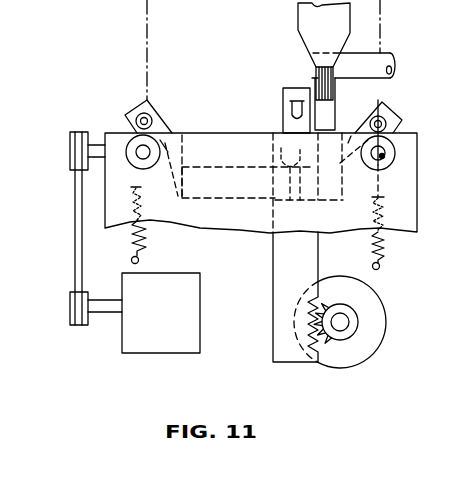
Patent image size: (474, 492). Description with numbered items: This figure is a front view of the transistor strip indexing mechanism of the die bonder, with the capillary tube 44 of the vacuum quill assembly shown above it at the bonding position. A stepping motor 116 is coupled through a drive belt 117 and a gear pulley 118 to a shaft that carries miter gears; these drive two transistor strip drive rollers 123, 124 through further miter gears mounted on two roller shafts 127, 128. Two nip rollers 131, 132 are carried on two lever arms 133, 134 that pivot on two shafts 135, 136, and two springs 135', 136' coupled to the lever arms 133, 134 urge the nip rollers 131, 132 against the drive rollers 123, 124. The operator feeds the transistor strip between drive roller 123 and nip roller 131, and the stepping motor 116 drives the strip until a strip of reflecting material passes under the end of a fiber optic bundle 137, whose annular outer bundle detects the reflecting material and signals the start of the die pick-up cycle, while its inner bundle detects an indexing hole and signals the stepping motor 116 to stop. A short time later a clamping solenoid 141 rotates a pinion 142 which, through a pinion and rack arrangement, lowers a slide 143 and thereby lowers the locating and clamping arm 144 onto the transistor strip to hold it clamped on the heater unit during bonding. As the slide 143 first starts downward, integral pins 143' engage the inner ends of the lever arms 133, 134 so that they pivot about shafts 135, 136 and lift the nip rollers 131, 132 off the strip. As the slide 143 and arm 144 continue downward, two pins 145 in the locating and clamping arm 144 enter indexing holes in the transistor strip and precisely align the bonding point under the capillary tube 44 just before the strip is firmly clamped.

The capillary tube 44 is at (316, 72).
The stepping motor 116 is at (167, 352).
The drive belt 117 is at (75, 246).
The gear pulley 118 is at (70, 138).
The transistor strip drive roller 123 is at (163, 141).
The transistor strip drive roller 124 is at (402, 128).
The roller shaft 127 is at (143, 169).
The roller shaft 128 is at (384, 156).
The nip roller 131 is at (134, 108).
The nip roller 132 is at (395, 110).
The lever arm 133 is at (158, 105).
The lever arm 134 is at (375, 107).
The shaft 135 is at (246, 182).
The spring 135' is at (119, 225).
The shaft 136 is at (336, 181).
The spring 136' is at (403, 217).
The fiber optic bundle 137 is at (336, 95).
The clamping solenoid 141 is at (386, 306).
The pinion 142 is at (336, 340).
The slide 143 is at (274, 297).
The integral pins 143' is at (268, 152).
The locating and clamping arm 144 is at (300, 88).
The pins 145 is at (284, 117).